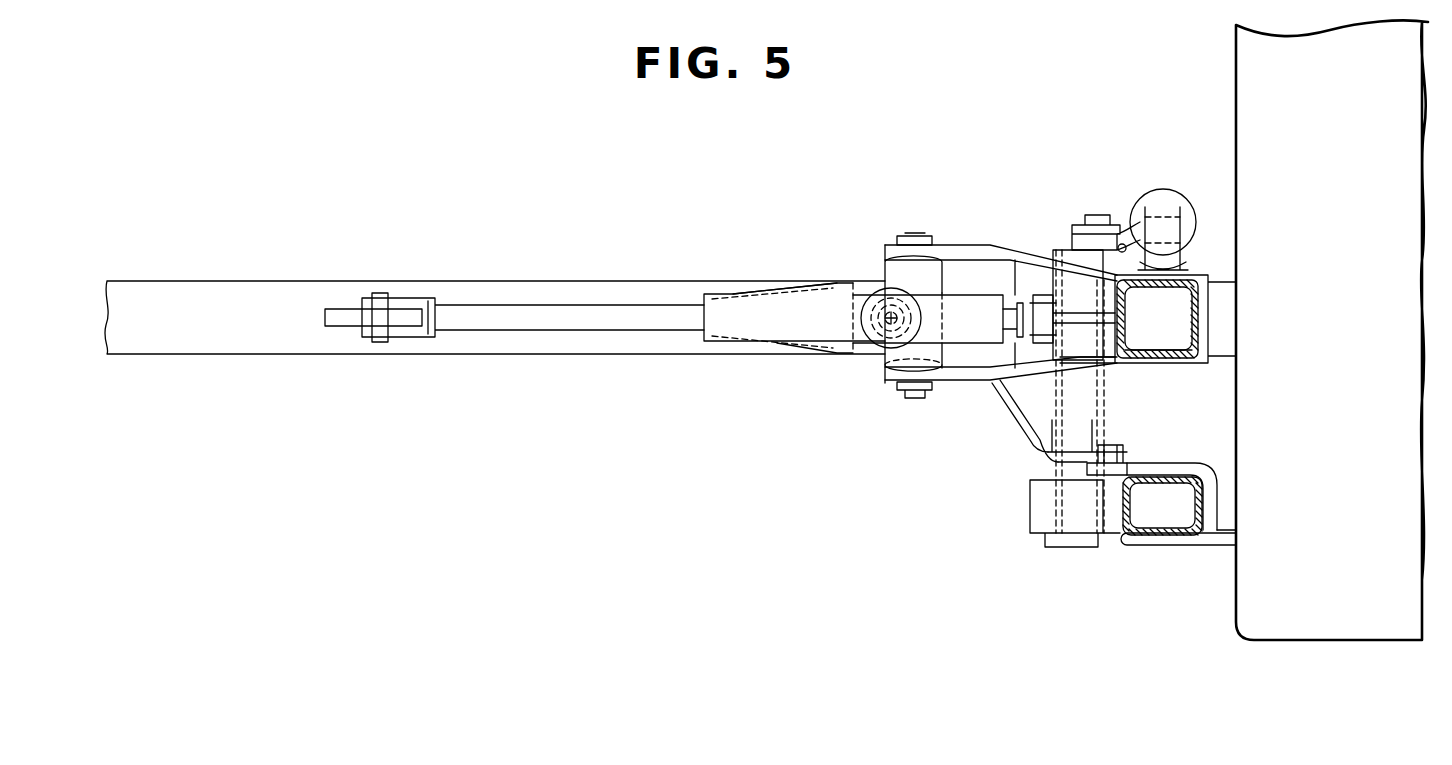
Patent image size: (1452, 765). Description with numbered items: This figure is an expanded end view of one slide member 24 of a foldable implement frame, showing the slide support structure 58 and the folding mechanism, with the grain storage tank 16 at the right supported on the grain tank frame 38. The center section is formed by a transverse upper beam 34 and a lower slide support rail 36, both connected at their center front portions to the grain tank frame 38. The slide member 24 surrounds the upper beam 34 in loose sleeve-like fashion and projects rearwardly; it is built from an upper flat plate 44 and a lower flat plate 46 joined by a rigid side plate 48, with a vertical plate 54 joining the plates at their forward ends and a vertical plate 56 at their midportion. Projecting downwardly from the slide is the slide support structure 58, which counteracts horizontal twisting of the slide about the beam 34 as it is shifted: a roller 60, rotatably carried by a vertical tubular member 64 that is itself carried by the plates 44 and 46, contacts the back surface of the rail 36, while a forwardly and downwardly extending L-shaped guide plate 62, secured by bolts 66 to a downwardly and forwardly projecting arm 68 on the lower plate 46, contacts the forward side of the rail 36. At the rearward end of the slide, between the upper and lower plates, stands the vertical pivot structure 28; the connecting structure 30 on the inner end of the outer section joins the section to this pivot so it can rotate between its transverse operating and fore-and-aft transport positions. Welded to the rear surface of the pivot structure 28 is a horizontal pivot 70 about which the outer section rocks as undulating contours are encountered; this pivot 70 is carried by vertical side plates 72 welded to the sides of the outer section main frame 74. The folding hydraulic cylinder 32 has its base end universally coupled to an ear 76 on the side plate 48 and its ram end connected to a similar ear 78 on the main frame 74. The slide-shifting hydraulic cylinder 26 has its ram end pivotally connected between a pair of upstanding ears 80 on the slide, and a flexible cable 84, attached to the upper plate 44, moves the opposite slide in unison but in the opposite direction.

The grain storage tank 16 is at (1320, 632).
The slide member 24 is at (1035, 221).
The hydraulic cylinder 26 is at (1165, 207).
The vertical pivot structure 28 is at (880, 270).
The connecting structure 30 is at (843, 392).
The hydraulic cylinder 32 is at (783, 323).
The transverse upper beam 34 is at (1195, 353).
The slide support rail 36 is at (1172, 533).
The grain tank frame 38 is at (1220, 288).
The upper flat plate 44 is at (960, 257).
The lower flat plate 46 is at (948, 378).
The side plate 48 is at (1032, 350).
The vertical plate 54 is at (1203, 305).
The vertical plate 56 is at (1118, 357).
The slide support structure 58 is at (1046, 569).
The roller 60 is at (1108, 527).
The L-shaped guide plate 62 is at (1210, 498).
The vertical tubular member 64 is at (1068, 437).
The bolts 66 is at (1123, 473).
The arm 68 is at (1017, 425).
The horizontal pivot 70 is at (862, 317).
The vertical side plates 72 is at (825, 290).
The outer section main frame 74 is at (218, 298).
The ear 76 is at (1078, 318).
The ear 78 is at (346, 313).
The upstanding ears 80 is at (1162, 212).
The flexible cable 84 is at (1125, 255).